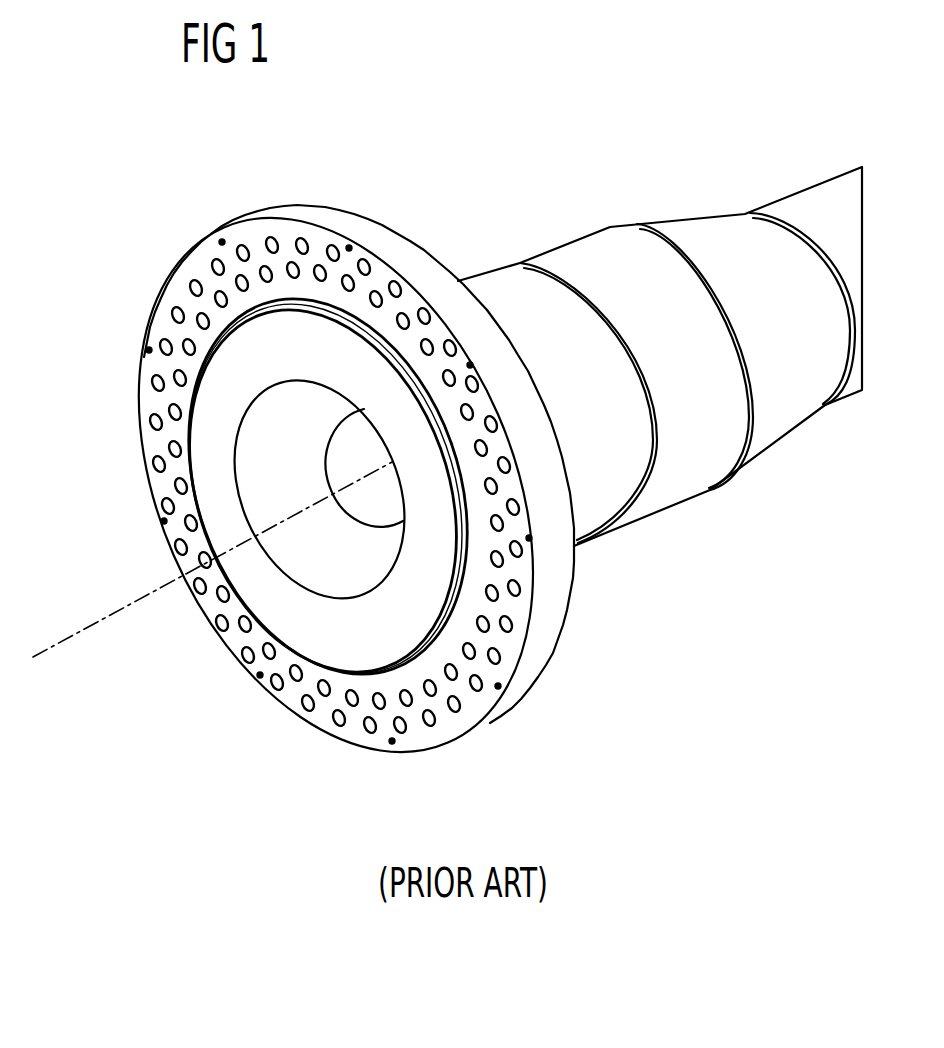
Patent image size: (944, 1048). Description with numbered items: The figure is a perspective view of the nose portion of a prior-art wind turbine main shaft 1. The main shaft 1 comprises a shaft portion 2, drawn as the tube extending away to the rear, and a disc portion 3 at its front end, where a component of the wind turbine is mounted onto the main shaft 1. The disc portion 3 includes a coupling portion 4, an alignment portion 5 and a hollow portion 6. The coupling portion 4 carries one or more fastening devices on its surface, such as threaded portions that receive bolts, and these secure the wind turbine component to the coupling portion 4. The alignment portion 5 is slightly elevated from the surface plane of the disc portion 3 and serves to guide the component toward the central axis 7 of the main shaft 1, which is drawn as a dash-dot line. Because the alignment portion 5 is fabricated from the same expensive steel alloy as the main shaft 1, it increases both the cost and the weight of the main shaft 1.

The main shaft 1 is at (447, 485).
The shaft portion 2 is at (773, 444).
The disc portion 3 is at (340, 485).
The coupling portion 4 is at (477, 702).
The alignment portion 5 is at (253, 587).
The hollow portion 6 is at (264, 470).
The central axis 7 is at (104, 621).